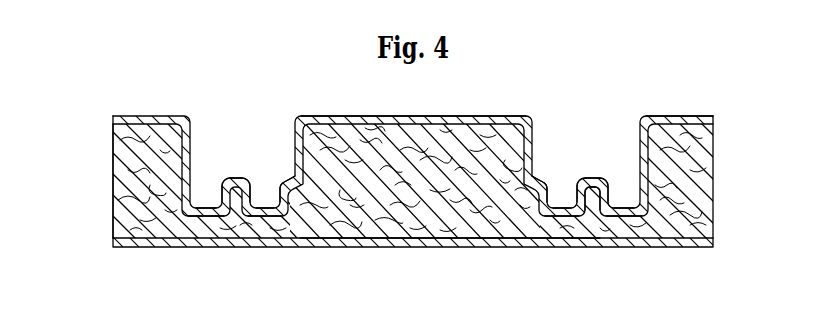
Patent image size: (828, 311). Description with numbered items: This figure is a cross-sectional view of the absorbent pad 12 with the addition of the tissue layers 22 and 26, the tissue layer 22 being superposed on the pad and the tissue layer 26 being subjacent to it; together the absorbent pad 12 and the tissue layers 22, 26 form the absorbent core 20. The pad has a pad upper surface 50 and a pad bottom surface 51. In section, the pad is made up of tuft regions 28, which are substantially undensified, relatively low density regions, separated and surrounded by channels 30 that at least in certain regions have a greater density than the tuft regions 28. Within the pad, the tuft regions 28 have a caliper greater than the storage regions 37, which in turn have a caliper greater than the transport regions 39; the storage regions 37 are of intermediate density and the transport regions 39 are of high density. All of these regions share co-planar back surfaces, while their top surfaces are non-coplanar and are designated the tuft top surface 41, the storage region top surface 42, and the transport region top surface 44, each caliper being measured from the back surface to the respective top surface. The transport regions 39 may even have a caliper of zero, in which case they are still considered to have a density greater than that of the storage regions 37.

The absorbent pad 12 is at (116, 160).
The absorbent core 20 is at (414, 155).
The tissue layer 22 is at (462, 118).
The tissue layer 26 is at (403, 247).
The tuft regions 28 is at (142, 135).
The channels 30 is at (245, 100).
The storage regions 37 is at (294, 188).
The transport regions 39 is at (266, 224).
The tuft top surface 41 is at (659, 125).
The storage region top surface 42 is at (597, 190).
The transport region top surface 44 is at (622, 215).
The pad upper surface 50 is at (347, 122).
The pad bottom surface 51 is at (448, 242).